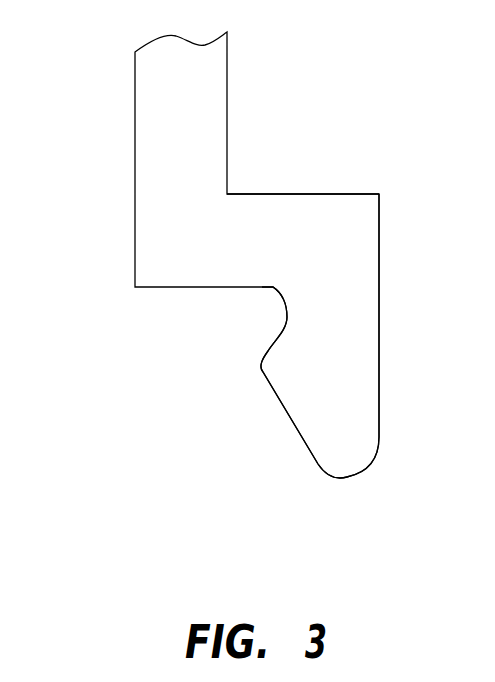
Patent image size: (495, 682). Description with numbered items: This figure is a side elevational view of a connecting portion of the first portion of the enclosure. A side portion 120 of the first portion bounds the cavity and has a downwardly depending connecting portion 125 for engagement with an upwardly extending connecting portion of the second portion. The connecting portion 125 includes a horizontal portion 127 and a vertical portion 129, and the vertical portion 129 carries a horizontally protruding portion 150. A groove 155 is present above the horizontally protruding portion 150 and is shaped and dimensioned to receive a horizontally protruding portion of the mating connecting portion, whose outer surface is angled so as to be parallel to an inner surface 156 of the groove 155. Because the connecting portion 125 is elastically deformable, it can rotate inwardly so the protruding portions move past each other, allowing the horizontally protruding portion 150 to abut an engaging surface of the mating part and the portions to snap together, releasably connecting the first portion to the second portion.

The side portion 120 is at (135, 126).
The connecting portion 125 is at (399, 484).
The horizontal portion 127 is at (318, 194).
The vertical portion 129 is at (380, 333).
The horizontally protruding portion 150 is at (255, 375).
The groove 155 is at (282, 300).
The inner surface 156 is at (273, 290).